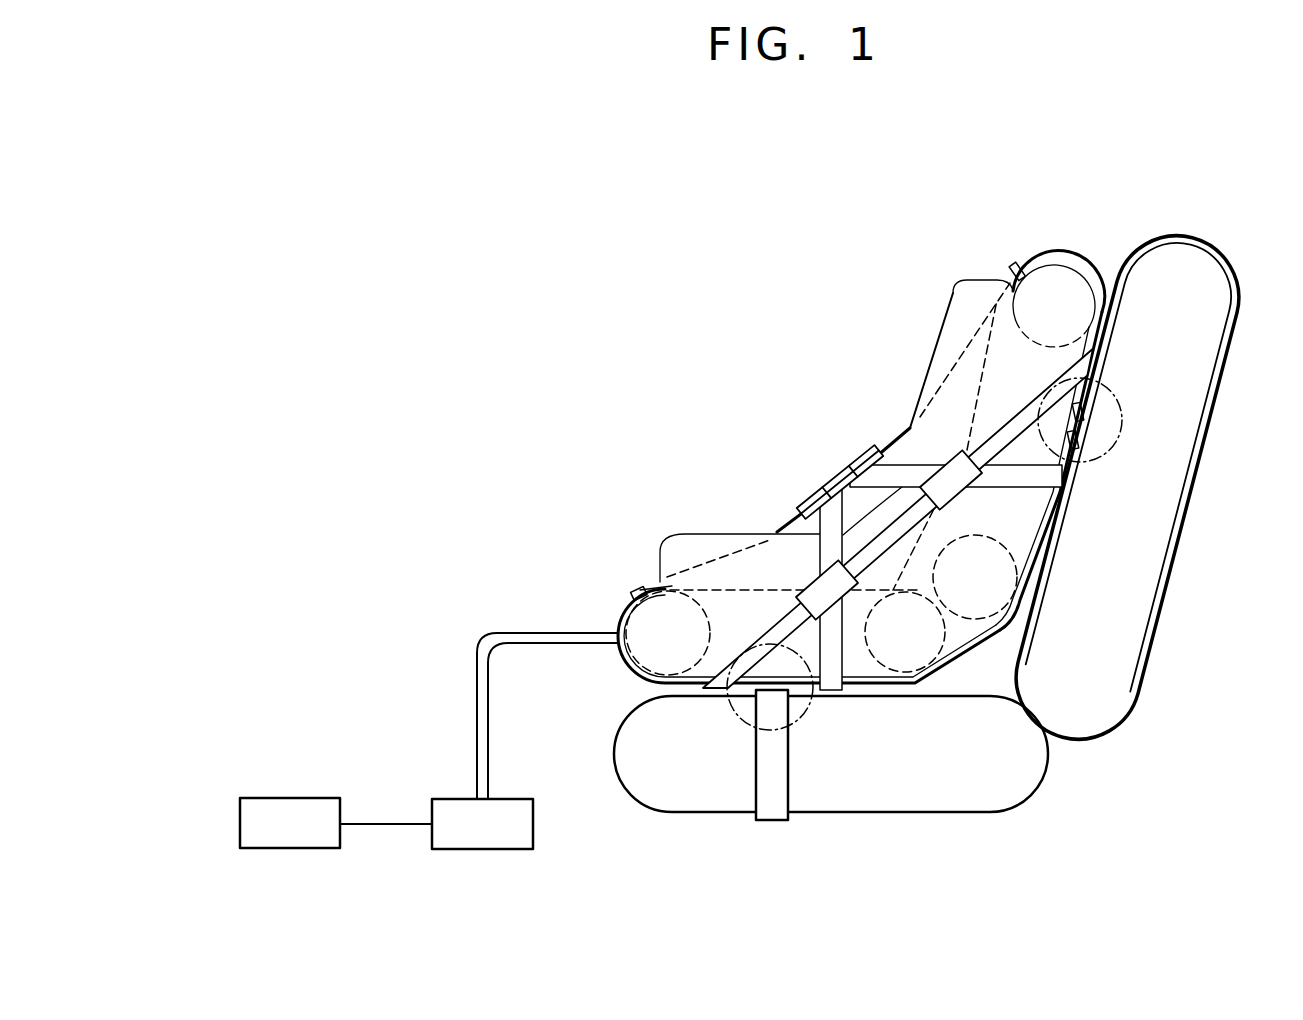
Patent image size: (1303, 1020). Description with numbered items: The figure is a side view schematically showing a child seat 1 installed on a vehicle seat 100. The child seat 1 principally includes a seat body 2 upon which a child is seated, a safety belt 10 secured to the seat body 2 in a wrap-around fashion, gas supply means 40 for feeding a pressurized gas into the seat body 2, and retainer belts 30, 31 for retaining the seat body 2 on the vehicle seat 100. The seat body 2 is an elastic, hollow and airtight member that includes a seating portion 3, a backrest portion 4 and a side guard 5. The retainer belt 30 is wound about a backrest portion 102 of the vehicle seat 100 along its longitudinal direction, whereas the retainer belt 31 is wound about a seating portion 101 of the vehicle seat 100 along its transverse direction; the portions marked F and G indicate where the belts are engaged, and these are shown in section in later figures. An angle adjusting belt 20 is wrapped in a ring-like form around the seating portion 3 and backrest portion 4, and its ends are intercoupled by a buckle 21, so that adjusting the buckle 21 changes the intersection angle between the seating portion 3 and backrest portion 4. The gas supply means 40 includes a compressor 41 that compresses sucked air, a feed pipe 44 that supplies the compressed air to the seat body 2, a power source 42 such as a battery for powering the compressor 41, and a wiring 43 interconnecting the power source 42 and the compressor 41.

The child seat 1 is at (604, 424).
The seat body 2 is at (933, 300).
The seating portion 3 is at (625, 588).
The backrest portion 4 is at (1068, 278).
The side guard 5 is at (935, 385).
The safety belt 10 is at (1040, 258).
The angle adjusting belt 20 is at (830, 680).
The buckle 21 is at (912, 437).
The retainer belt 30 is at (1203, 490).
The retainer belt 31 is at (773, 813).
The gas supply means 40 is at (317, 688).
The compressor 41 is at (487, 850).
The power source 42 is at (288, 848).
The wiring 43 is at (392, 825).
The feed pipe 44 is at (475, 717).
The vehicle seat 100 is at (1097, 780).
The seating portion 101 is at (955, 803).
The backrest portion 102 is at (1197, 283).
The portion F is at (1088, 465).
The portion G is at (730, 710).